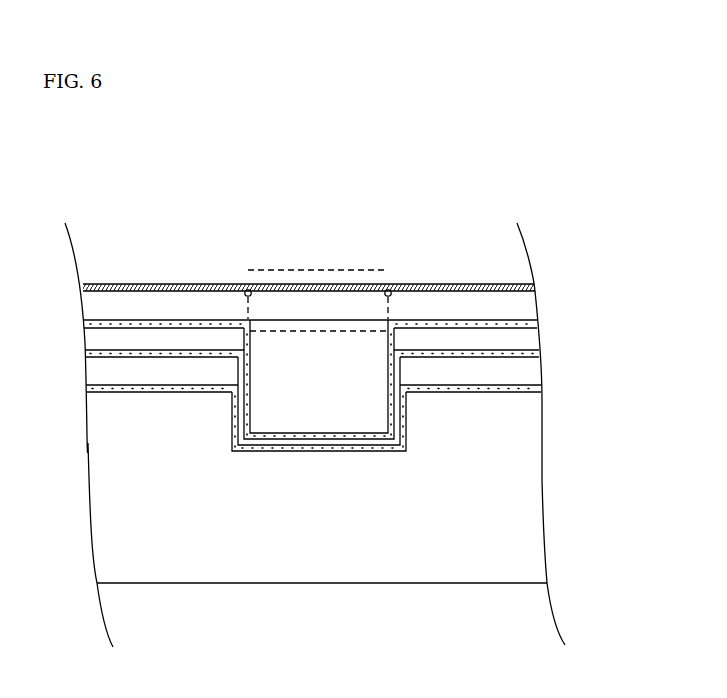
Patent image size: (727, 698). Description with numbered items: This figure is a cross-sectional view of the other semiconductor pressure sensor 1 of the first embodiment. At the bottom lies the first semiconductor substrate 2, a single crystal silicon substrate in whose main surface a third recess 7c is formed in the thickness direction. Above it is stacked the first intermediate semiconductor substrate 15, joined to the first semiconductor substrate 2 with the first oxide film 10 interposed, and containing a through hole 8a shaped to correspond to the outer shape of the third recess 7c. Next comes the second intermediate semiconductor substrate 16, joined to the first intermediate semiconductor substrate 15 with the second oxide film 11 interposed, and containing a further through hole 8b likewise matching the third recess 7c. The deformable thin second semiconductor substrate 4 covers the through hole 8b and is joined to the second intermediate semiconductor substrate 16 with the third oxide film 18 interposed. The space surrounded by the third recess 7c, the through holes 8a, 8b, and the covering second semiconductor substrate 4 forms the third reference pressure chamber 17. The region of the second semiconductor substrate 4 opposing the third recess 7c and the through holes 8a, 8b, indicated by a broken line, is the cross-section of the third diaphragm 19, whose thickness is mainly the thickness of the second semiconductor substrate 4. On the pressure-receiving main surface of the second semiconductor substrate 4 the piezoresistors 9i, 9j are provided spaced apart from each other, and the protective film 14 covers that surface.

The semiconductor pressure sensor 1 is at (462, 193).
The first semiconductor substrate 2 is at (505, 487).
The second semiconductor substrate 4 is at (524, 308).
The third recess 7c is at (408, 420).
The through hole 8a is at (237, 373).
The through hole 8b is at (242, 342).
The piezoresistor 9i is at (248, 290).
The piezoresistor 9j is at (388, 290).
The first oxide film 10 is at (494, 387).
The second oxide film 11 is at (459, 354).
The protective film 14 is at (175, 283).
The first intermediate semiconductor substrate 15 is at (517, 373).
The second intermediate semiconductor substrate 16 is at (518, 342).
The third reference pressure chamber 17 is at (350, 407).
The third oxide film 18 is at (429, 323).
The third diaphragm 19 is at (303, 330).